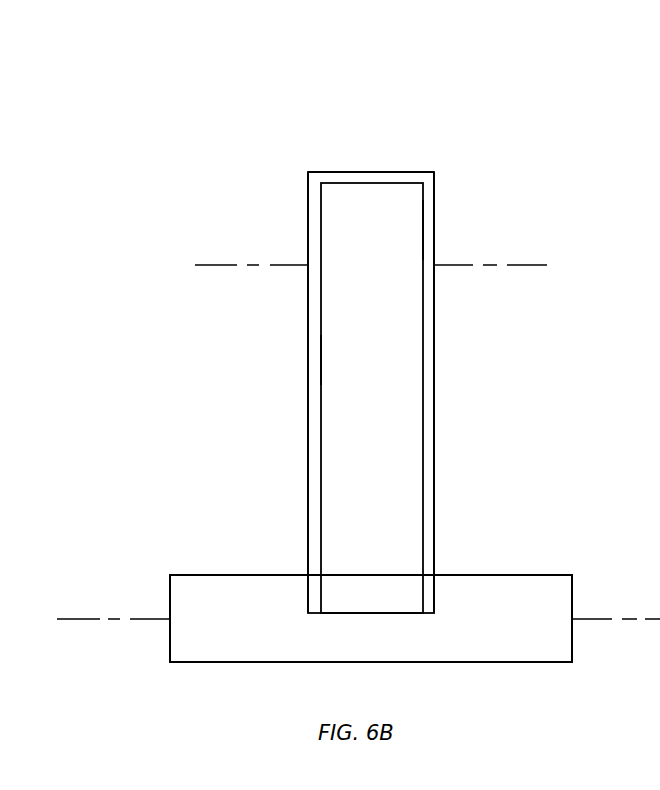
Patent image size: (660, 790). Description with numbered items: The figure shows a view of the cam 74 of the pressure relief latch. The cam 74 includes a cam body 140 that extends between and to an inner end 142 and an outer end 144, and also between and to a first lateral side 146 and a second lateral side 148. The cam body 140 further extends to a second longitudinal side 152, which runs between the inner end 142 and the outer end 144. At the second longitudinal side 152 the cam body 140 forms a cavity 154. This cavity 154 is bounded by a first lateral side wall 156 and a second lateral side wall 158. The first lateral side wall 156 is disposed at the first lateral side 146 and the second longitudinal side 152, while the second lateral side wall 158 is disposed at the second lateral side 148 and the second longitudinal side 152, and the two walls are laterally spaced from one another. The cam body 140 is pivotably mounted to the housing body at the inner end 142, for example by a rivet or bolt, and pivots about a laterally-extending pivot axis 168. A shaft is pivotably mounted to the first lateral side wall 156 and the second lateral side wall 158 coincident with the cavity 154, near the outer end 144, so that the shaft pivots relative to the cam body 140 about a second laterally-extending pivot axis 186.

The cam 74 is at (485, 96).
The cam body 140 is at (407, 434).
The inner end 142 is at (506, 676).
The outer end 144 is at (357, 151).
The first lateral side 146 is at (452, 343).
The second lateral side 148 is at (283, 441).
The second longitudinal side 152 is at (419, 509).
The cavity 154 is at (396, 336).
The first lateral side wall 156 is at (423, 243).
The second lateral side wall 158 is at (321, 345).
The pivot axis 168 is at (90, 620).
The pivot axis 186 is at (218, 266).